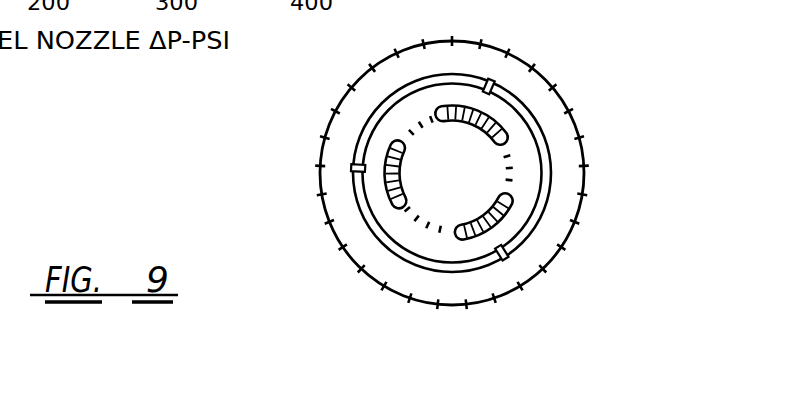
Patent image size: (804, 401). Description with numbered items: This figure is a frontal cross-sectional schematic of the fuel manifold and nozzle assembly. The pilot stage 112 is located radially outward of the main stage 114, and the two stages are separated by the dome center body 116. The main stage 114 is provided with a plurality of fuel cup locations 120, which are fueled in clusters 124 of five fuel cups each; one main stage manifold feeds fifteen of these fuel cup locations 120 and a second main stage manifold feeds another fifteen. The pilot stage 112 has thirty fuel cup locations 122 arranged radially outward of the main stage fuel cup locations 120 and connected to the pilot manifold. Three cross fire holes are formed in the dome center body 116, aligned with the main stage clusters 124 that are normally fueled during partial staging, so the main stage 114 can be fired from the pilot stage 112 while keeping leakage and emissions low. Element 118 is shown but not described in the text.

The pilot stage 112 is at (357, 268).
The main stage 114 is at (397, 142).
The dome center body 116 is at (534, 115).
The clips 118 is at (490, 82).
The fuel cup locations 120 is at (378, 178).
The fuel cup locations 122 is at (322, 188).
The clusters 124 is at (395, 196).